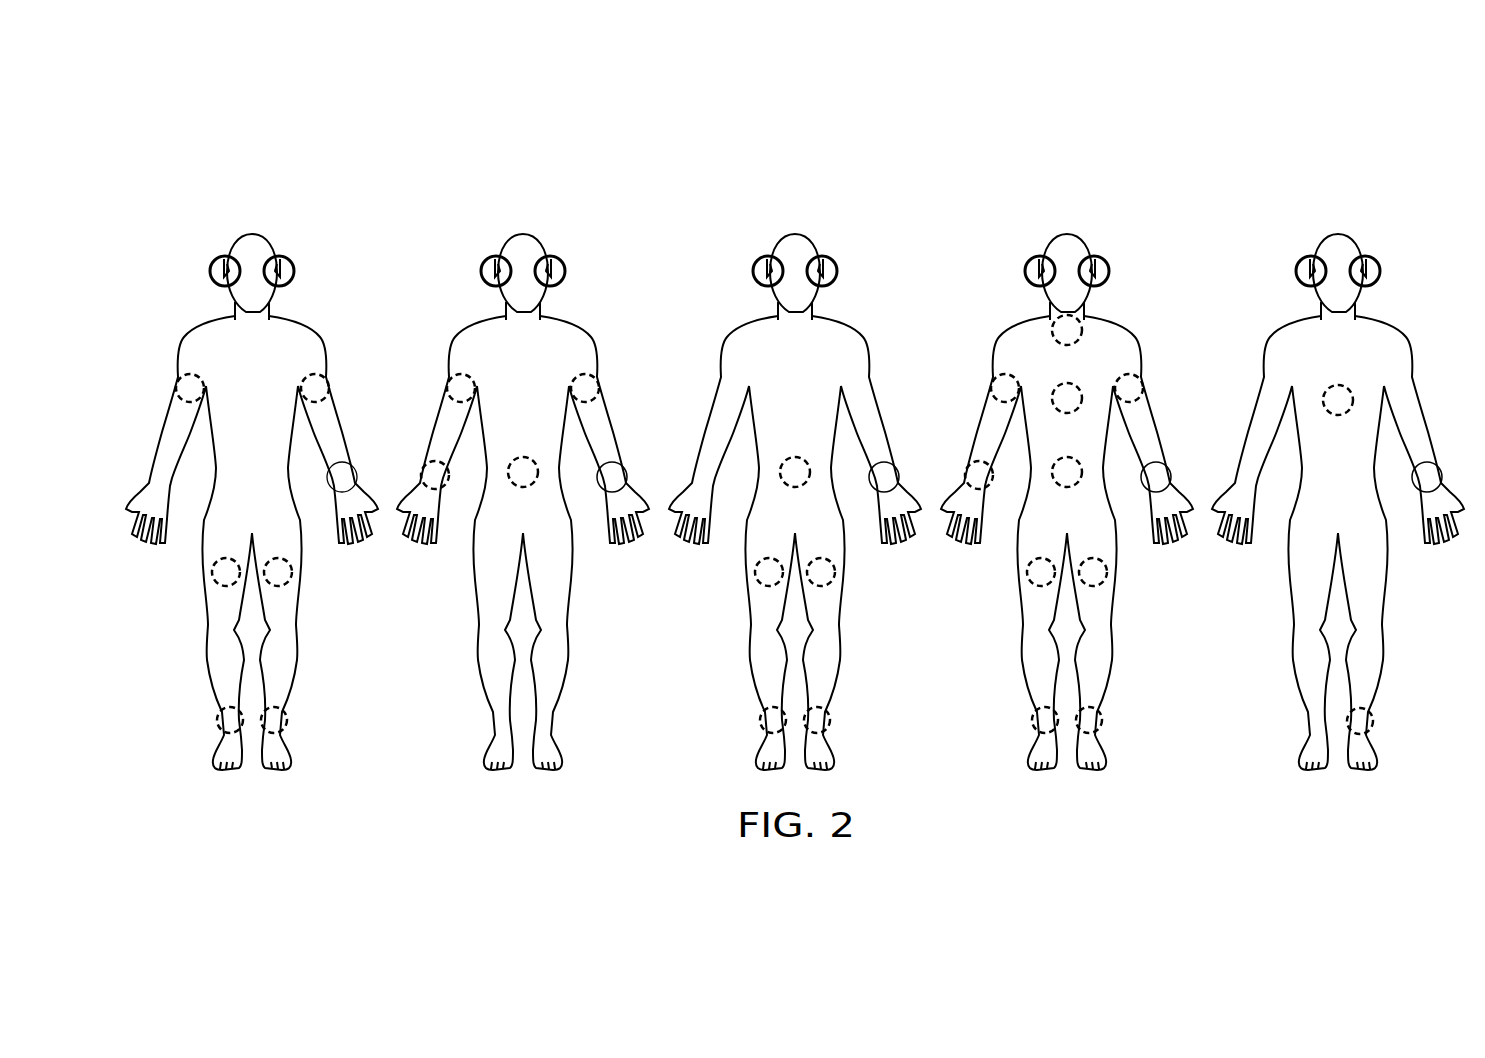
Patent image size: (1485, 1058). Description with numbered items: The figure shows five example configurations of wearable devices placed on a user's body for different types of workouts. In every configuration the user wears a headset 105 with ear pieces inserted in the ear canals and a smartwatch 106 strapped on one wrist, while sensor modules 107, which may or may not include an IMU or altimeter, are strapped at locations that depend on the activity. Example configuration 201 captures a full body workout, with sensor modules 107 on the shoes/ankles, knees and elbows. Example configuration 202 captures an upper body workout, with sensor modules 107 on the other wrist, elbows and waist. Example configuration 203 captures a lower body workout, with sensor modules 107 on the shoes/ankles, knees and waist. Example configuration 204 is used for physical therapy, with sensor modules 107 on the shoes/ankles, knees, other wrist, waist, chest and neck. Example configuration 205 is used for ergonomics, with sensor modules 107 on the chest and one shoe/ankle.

The headset 105 is at (210, 264).
The smartwatch 106 is at (351, 466).
The sensor modules 107 is at (182, 345).
The example configuration 201 is at (203, 117).
The example configuration 202 is at (474, 117).
The example configuration 203 is at (746, 117).
The example configuration 204 is at (1118, 117).
The example configuration 205 is at (1389, 117).